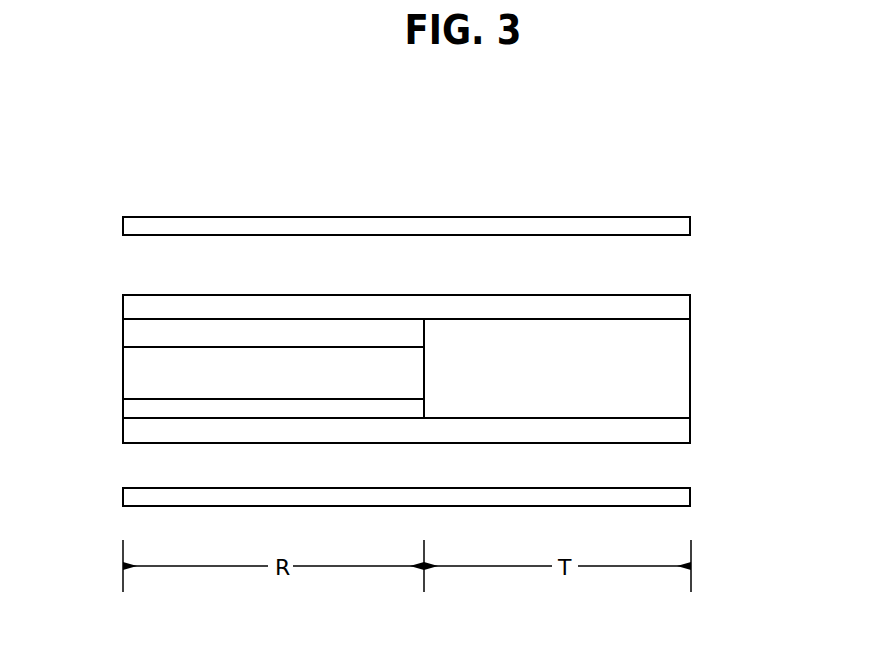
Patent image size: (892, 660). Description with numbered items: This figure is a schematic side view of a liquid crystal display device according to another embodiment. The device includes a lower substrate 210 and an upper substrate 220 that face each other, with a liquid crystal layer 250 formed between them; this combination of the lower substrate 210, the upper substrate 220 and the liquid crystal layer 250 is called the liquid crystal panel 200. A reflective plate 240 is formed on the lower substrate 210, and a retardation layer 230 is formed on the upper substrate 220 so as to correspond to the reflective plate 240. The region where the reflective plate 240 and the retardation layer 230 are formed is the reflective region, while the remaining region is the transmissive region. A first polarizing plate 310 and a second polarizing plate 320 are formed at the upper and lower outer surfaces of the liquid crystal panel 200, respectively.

The liquid crystal panel 200 is at (775, 290).
The lower substrate 210 is at (684, 431).
The upper substrate 220 is at (684, 306).
The retardation layer 230 is at (135, 335).
The reflective plate 240 is at (135, 407).
The liquid crystal layer 250 is at (135, 372).
The first polarizing plate 310 is at (689, 225).
The second polarizing plate 320 is at (689, 497).